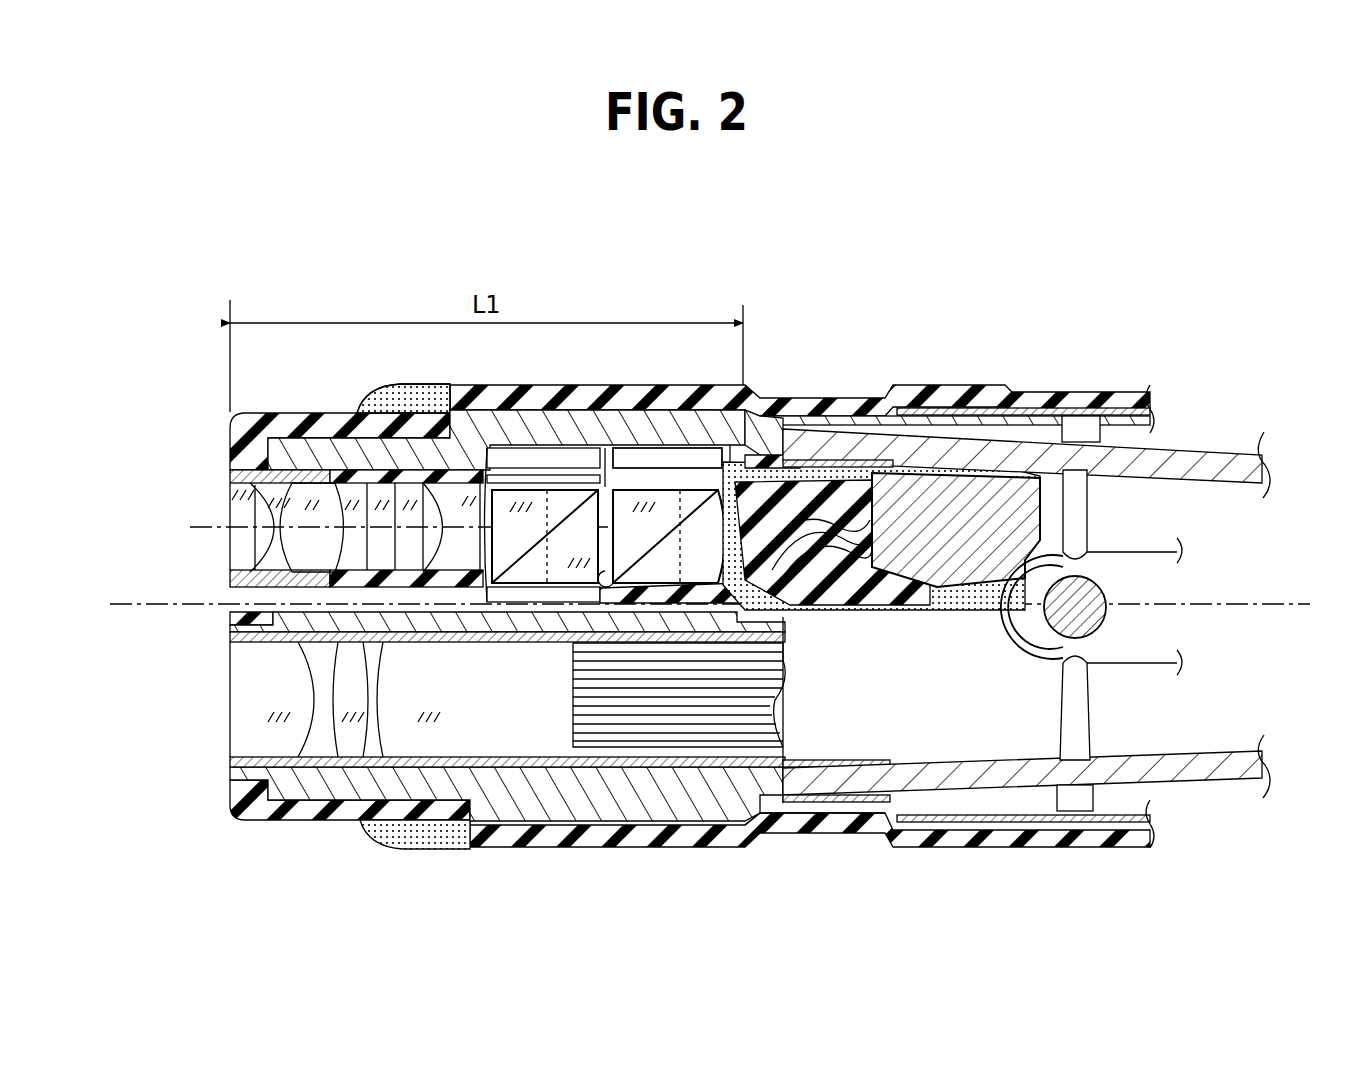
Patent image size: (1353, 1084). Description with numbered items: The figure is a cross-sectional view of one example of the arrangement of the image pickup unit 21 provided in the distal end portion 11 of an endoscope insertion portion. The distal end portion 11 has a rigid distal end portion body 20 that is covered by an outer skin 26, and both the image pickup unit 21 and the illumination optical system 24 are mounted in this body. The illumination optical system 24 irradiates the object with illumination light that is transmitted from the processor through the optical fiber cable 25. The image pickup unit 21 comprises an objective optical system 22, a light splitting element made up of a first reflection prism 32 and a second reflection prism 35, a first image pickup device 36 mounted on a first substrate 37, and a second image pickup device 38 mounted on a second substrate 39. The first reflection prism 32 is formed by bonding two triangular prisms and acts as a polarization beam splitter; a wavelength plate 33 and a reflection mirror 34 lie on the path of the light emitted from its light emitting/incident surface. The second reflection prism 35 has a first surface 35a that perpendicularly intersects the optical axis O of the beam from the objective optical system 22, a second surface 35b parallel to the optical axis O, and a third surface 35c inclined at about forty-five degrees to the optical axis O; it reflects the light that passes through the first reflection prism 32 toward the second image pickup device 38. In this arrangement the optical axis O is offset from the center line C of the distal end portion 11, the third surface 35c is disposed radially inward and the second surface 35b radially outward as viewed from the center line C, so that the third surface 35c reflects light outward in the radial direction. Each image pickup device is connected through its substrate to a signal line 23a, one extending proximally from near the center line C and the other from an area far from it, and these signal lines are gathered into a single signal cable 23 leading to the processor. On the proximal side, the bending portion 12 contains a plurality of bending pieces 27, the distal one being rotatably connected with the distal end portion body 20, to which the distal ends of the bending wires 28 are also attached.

The distal end portion 11 is at (783, 327).
The bending portion 12 is at (1126, 384).
The distal end portion body 20 is at (613, 835).
The image pickup unit 21 is at (606, 500).
The objective optical system 22 is at (245, 548).
The signal cable 23 is at (977, 517).
The signal line 23a is at (790, 460).
The illumination optical system 24 is at (255, 712).
The optical fiber cable 25 is at (678, 715).
The outer skin 26 is at (752, 835).
The bending piece 27 is at (1148, 577).
The bending wire 28 is at (1200, 462).
The first reflection prism 32 is at (500, 480).
The wavelength plate 33 is at (520, 488).
The reflection mirror 34 is at (560, 458).
The second reflection prism 35 is at (650, 542).
The first surface 35a is at (613, 572).
The second surface 35b is at (664, 490).
The third surface 35c is at (700, 508).
The first image pickup device 36 is at (496, 836).
The first substrate 37 is at (496, 836).
The second image pickup device 38 is at (617, 585).
The second substrate 39 is at (617, 585).
The center line C is at (130, 604).
The optical axis O is at (193, 526).